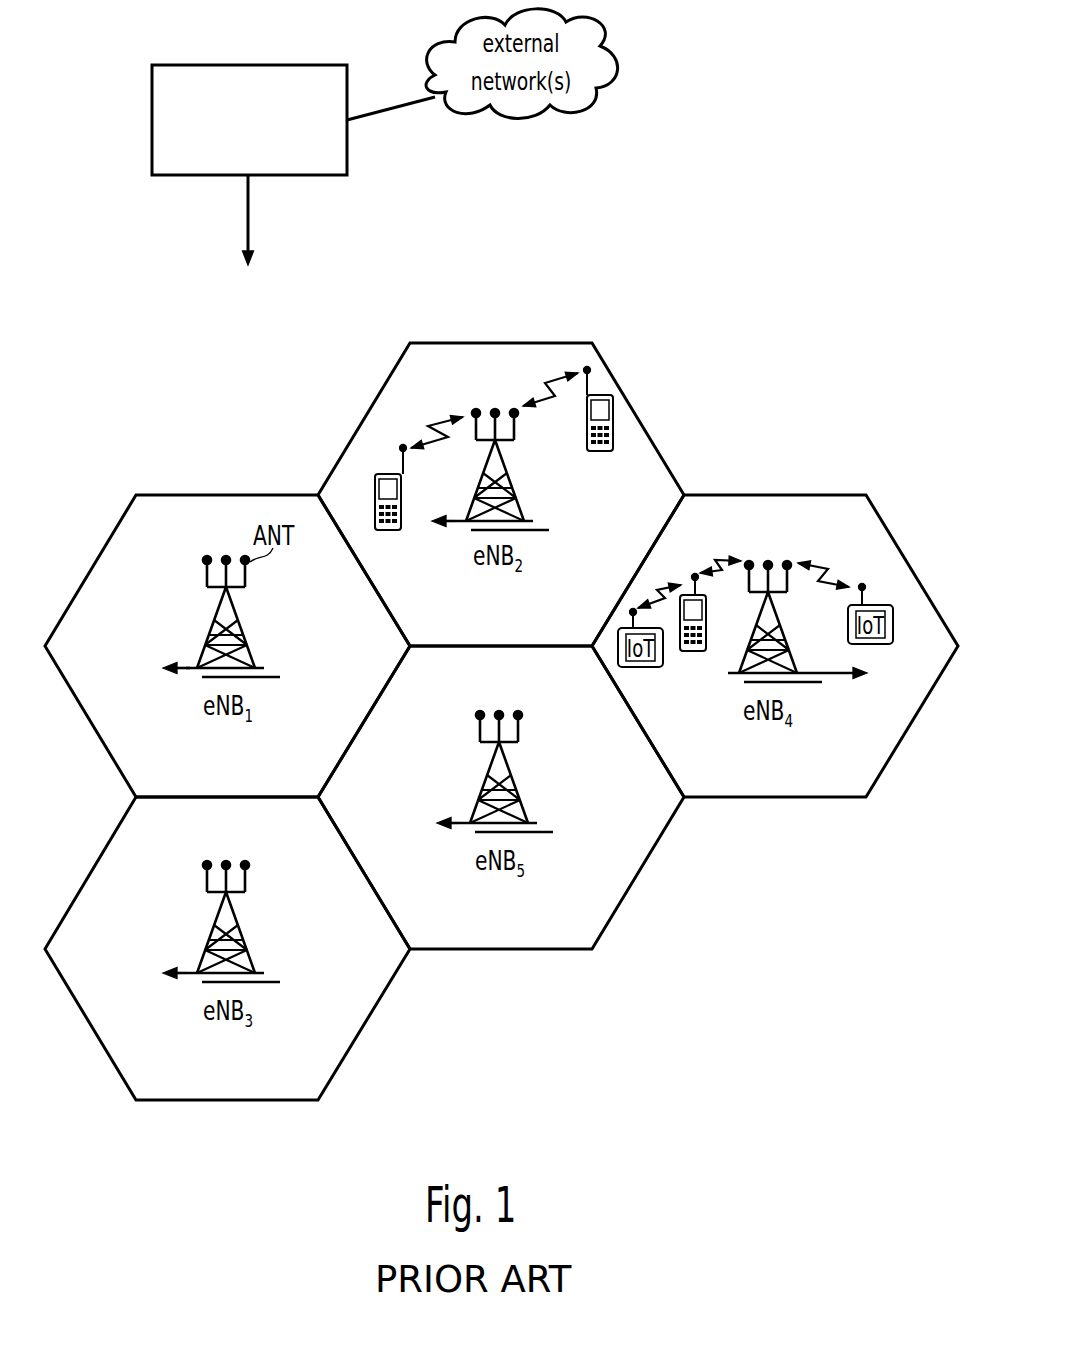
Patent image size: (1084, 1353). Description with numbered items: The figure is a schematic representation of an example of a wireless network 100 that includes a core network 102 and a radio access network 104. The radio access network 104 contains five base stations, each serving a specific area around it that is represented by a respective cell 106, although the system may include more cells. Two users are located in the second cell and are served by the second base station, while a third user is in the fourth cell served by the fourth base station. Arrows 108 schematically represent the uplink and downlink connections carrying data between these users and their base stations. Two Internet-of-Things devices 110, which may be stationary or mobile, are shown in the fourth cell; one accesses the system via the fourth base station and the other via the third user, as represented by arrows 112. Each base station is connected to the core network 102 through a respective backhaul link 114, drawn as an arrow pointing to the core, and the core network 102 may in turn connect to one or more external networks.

The wireless network 100 is at (815, 199).
The core network 102 is at (152, 125).
The radio access network 104 is at (640, 990).
The cell 106 is at (501, 721).
The uplink/downlink connection 108 is at (428, 432).
The IoT device 110 is at (895, 625).
The arrow 112 is at (655, 590).
The backhaul link 114 is at (246, 208).